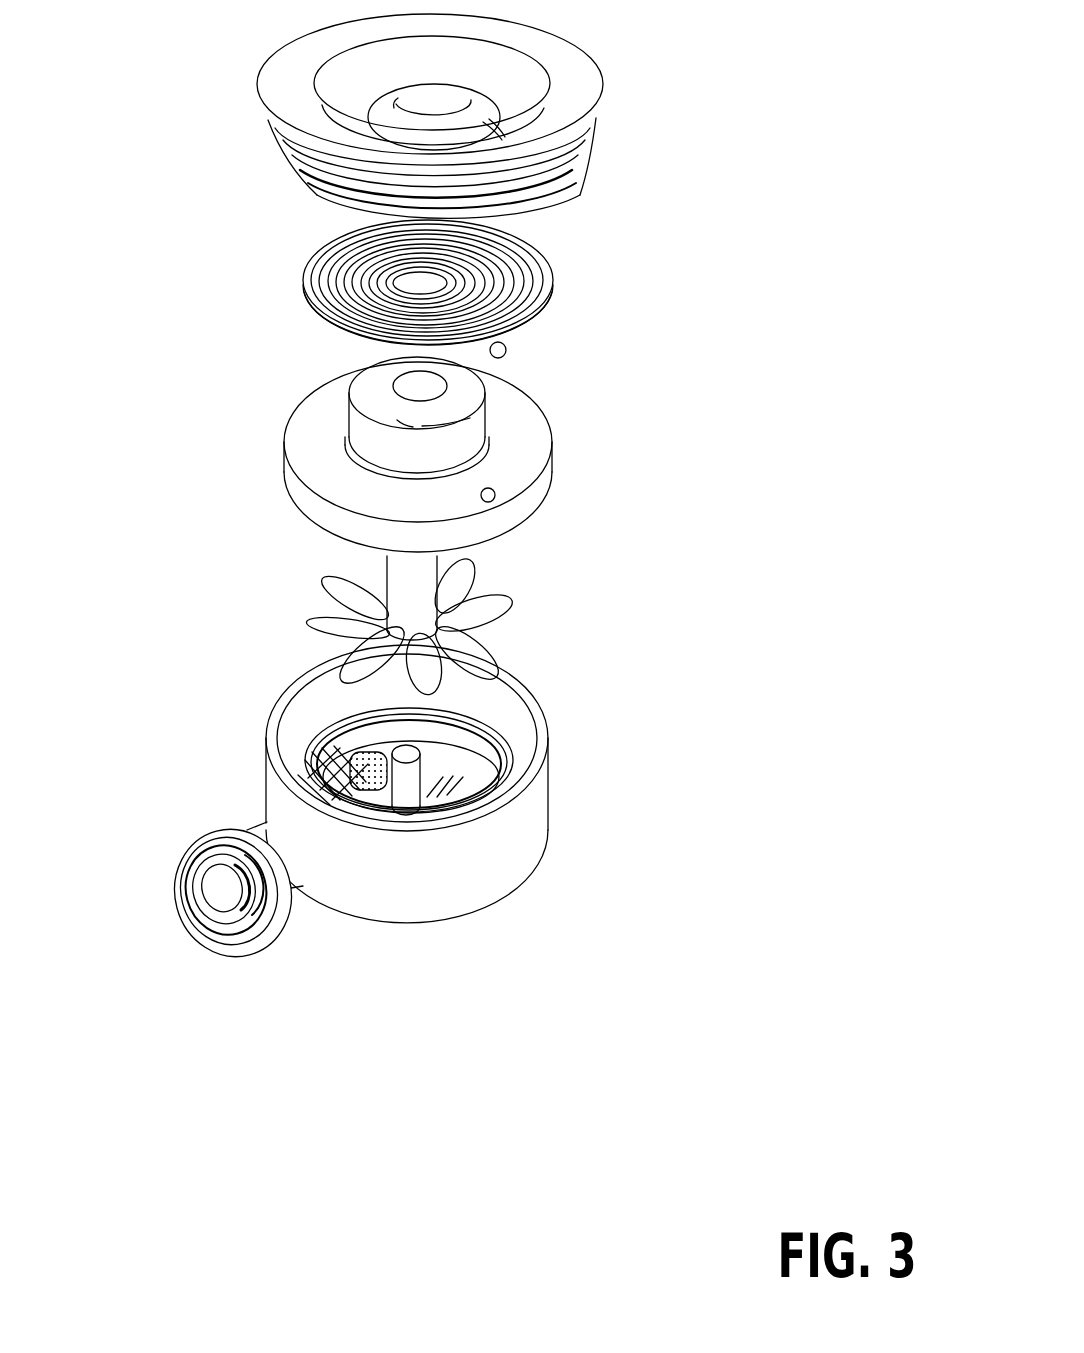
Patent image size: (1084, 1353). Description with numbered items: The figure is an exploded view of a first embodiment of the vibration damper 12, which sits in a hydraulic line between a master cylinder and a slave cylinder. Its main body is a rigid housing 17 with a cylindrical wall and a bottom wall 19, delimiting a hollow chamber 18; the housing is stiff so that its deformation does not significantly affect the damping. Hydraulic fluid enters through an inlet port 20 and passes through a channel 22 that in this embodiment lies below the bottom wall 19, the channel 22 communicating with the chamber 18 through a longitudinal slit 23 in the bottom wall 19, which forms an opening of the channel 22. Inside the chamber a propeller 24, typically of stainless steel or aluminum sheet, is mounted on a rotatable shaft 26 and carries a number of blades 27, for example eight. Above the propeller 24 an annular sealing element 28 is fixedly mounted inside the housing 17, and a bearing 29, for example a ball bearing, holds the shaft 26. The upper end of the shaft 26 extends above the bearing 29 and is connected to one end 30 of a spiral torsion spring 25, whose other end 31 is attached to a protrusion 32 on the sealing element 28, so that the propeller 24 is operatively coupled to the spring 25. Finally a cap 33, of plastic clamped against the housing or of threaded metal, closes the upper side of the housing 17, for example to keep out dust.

The vibration damper 12 is at (326, 1027).
The rigid housing 17 is at (527, 828).
The hollow chamber 18 is at (512, 721).
The bottom wall 19 is at (455, 787).
The inlet port 20 is at (178, 857).
The channel 22 is at (336, 775).
The longitudinal slit 23 is at (340, 769).
The propeller 24 is at (288, 563).
The spiral torsion spring 25 is at (540, 275).
The rotatable shaft 26 is at (420, 580).
The blades 27 is at (492, 613).
The sealing element 28 is at (548, 485).
The bearing 29 is at (478, 420).
The one end of the spiral torsion spring 30 is at (422, 273).
The other end of the spiral torsion spring 31 is at (507, 350).
The protrusion 32 is at (490, 503).
The cap 33 is at (573, 110).